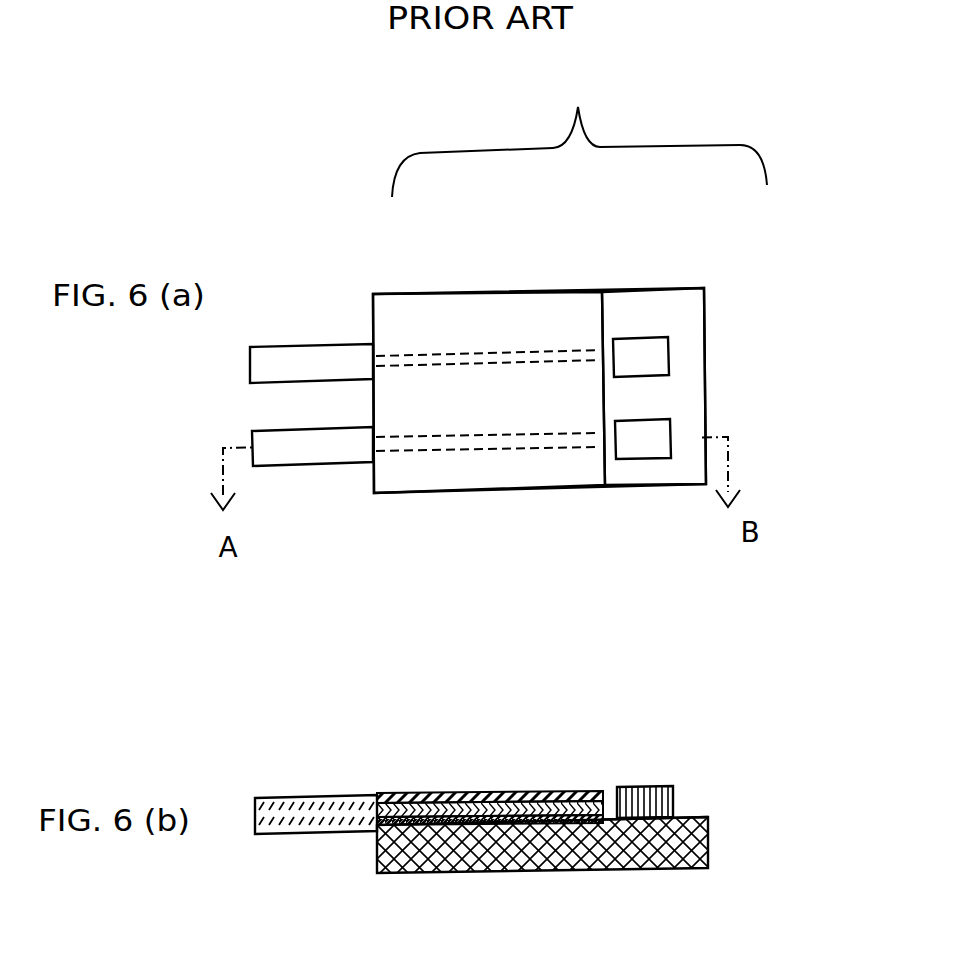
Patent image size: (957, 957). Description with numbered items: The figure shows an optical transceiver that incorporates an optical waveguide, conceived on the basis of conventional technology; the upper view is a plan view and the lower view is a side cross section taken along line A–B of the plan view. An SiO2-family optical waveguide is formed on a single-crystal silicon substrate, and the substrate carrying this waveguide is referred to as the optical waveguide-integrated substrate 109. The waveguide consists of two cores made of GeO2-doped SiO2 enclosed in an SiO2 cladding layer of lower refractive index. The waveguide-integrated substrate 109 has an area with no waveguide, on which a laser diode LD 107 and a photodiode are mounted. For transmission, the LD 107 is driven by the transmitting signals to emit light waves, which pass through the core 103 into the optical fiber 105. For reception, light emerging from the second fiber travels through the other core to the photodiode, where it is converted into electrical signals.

The core 103 is at (432, 353).
The optical fiber 105 is at (290, 345).
The LD 107 is at (662, 348).
The optical waveguide-integrated substrate 109 is at (579, 129).